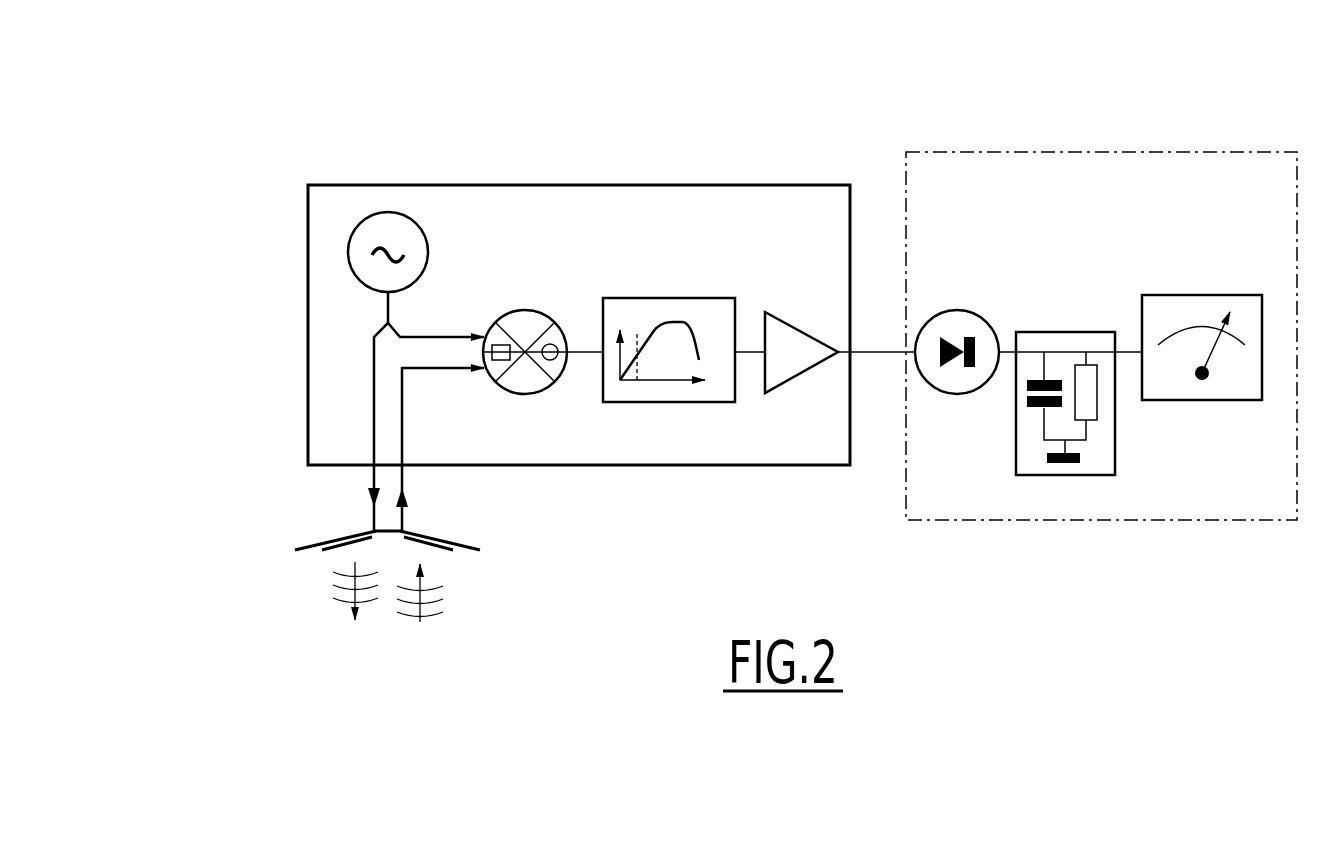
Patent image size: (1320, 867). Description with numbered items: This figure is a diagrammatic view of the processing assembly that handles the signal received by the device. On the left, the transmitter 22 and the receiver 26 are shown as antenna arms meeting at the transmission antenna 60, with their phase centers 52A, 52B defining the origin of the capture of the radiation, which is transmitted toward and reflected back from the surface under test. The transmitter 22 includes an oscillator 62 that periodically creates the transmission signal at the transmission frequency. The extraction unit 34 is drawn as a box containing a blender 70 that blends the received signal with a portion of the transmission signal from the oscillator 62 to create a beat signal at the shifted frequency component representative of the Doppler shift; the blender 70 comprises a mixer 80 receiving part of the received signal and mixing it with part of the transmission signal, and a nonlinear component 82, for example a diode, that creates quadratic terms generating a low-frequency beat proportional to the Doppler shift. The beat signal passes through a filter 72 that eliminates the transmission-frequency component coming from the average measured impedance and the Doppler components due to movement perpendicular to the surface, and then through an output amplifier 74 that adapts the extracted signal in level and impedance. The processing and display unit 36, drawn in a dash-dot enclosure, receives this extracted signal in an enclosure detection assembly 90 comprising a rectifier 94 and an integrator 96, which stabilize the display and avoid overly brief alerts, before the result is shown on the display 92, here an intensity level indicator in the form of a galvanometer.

The transmitter 22 is at (278, 547).
The receiver 26 is at (497, 547).
The extraction unit 34 is at (300, 197).
The processing and display unit 36 is at (1170, 136).
The phase center 52A is at (368, 540).
The phase center 52B is at (408, 540).
The transmission antenna 60 is at (370, 530).
The oscillator 62 is at (438, 254).
The blender 70 is at (532, 300).
The filter 72 is at (663, 292).
The output amplifier 74 is at (797, 312).
The mixer 80 is at (498, 362).
The nonlinear component 82 is at (556, 362).
The enclosure detection assembly 90 is at (1126, 218).
The display 92 is at (1200, 292).
The rectifier 94 is at (958, 302).
The integrator 96 is at (1055, 332).